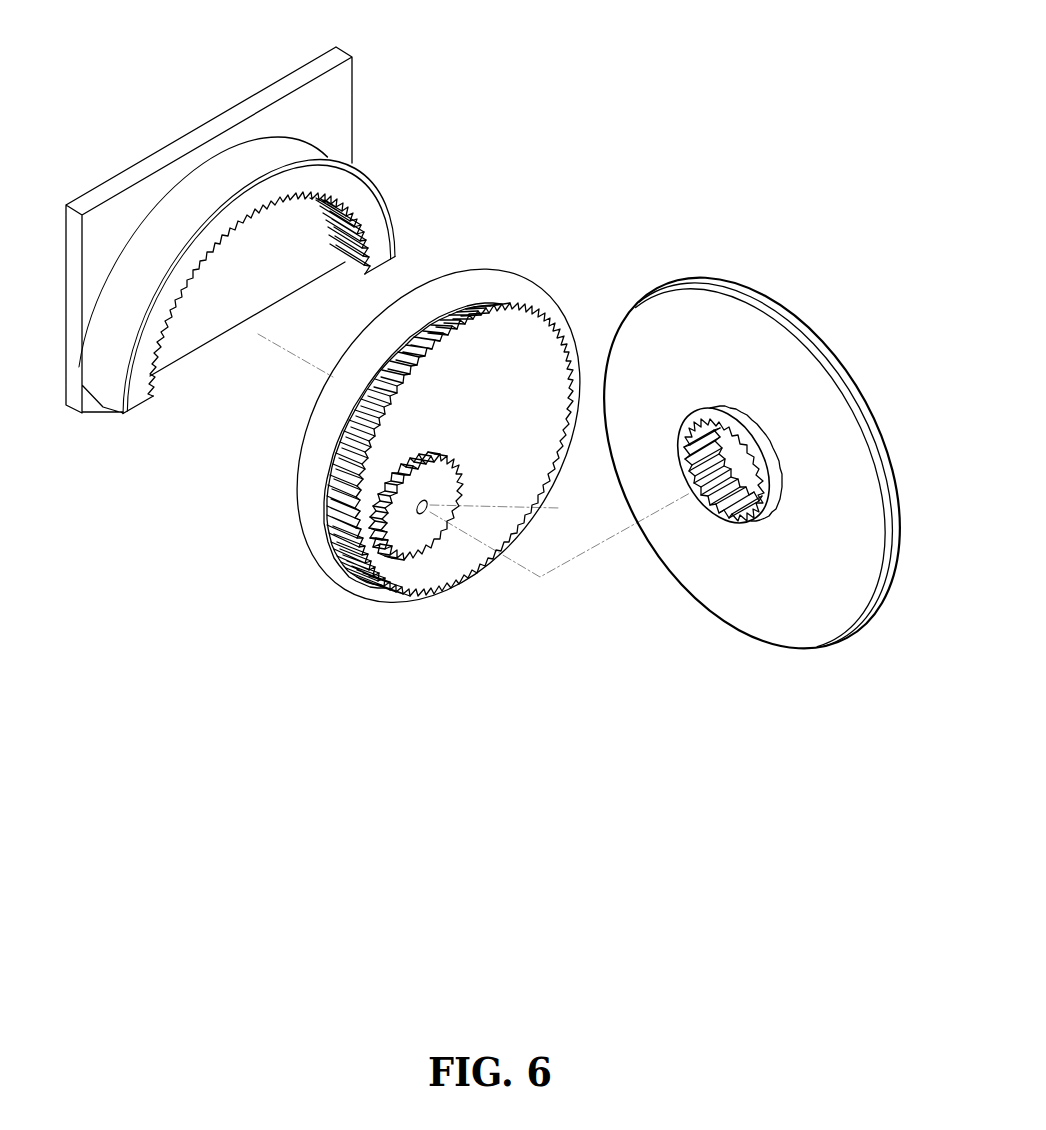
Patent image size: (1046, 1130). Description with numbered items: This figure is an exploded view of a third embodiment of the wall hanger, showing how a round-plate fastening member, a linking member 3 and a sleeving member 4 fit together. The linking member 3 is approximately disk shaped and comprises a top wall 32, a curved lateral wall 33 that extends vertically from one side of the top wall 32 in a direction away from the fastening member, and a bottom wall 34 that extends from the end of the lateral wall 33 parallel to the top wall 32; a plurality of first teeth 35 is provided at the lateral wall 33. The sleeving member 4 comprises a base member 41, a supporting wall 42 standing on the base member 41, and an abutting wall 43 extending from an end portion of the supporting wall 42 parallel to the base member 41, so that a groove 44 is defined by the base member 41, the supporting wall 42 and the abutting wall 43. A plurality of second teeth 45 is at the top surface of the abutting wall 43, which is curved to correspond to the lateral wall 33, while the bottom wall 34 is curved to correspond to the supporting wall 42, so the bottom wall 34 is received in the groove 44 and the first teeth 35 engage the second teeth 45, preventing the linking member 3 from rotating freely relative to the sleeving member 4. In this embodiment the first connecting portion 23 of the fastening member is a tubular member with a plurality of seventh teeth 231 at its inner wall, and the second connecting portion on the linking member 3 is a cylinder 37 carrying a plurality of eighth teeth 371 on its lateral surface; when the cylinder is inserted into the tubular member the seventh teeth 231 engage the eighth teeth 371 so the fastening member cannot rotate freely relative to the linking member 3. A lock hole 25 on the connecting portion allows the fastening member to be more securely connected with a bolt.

The sleeving member 4 is at (362, 82).
The base member 41 is at (103, 213).
The supporting wall 42 is at (237, 160).
The abutting wall 43 is at (375, 214).
The groove 44 is at (346, 237).
The second teeth 45 is at (180, 313).
The linking member 3 is at (487, 257).
The top wall 32 is at (497, 327).
The lateral wall 33 is at (342, 540).
The bottom wall 34 is at (493, 287).
The first teeth 35 is at (345, 562).
The pinion 37 is at (415, 562).
The eighth teeth 371 is at (380, 543).
The lock hole 25 is at (503, 506).
The first connecting portion 23 is at (708, 513).
The seventh teeth 231 is at (733, 523).